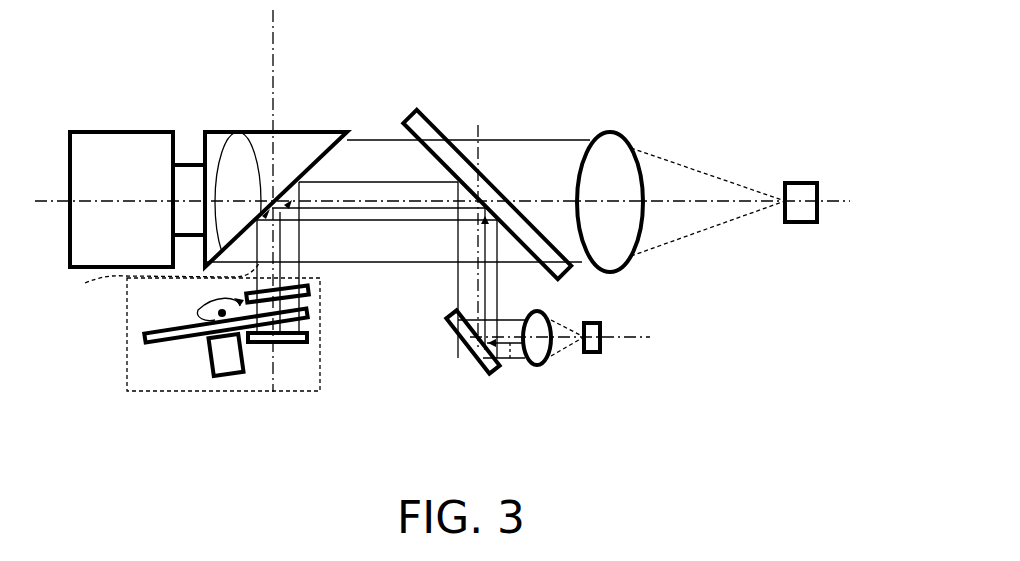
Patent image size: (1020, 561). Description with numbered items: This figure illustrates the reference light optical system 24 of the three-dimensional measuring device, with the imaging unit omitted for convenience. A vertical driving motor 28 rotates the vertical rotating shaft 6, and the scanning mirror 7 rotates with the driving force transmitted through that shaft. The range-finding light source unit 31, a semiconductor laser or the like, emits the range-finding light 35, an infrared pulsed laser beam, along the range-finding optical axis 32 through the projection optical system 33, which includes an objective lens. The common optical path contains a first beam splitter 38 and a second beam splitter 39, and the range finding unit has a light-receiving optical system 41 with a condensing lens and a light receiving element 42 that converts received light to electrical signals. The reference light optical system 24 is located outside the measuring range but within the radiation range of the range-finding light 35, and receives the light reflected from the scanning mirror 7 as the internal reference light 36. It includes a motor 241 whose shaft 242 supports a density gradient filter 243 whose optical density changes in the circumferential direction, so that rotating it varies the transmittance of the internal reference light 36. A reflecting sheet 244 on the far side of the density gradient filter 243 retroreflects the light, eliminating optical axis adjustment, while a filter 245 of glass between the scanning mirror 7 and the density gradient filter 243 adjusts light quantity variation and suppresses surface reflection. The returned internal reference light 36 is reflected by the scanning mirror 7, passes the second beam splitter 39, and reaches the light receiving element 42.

The vertical rotating shaft 6 is at (187, 165).
The scanning mirror 7 is at (307, 132).
The reference light optical system 24 is at (148, 393).
The vertical driving motor 28 is at (118, 132).
The range-finding light source unit 31 is at (592, 353).
The range-finding optical axis 32 is at (278, 48).
The projection optical system 33 is at (535, 365).
The range-finding light 35 is at (282, 250).
The internal reference light 36 is at (680, 190).
The first beam splitter 38 is at (465, 352).
The second beam splitter 39 is at (430, 112).
The light-receiving optical system 41 is at (612, 132).
The light receiving element 42 is at (800, 183).
The motor 241 is at (233, 378).
The shaft 242 is at (215, 300).
The density gradient filter 243 is at (143, 338).
The reflecting sheet 244 is at (310, 337).
The filter 245 is at (312, 290).